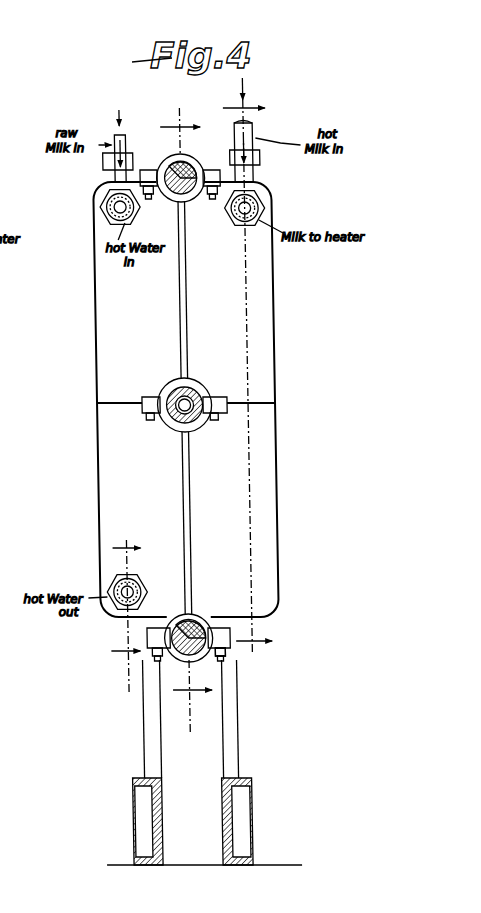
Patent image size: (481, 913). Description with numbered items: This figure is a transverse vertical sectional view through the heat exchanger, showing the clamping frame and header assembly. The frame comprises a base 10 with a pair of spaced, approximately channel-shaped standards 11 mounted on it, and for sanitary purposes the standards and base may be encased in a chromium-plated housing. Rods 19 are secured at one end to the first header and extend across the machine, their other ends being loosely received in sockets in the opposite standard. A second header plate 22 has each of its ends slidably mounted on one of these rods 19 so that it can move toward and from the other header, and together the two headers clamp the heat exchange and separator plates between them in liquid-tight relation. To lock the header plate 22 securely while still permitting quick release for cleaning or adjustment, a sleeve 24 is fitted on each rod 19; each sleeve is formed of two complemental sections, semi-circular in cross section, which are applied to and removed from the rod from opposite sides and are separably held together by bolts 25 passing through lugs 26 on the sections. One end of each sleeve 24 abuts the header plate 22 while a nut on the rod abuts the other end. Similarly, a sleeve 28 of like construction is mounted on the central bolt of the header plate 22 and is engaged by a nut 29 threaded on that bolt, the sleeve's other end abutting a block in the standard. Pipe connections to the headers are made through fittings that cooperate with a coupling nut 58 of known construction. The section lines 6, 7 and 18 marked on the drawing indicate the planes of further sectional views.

The section line 6- 6 is at (186, 414).
The section line 7- 7 is at (248, 373).
The base 10 is at (225, 800).
The standard 11 is at (154, 739).
The section line 18- 18 is at (125, 608).
The rod 19 is at (181, 164).
The header plate 22 is at (105, 372).
The sleeve 24 is at (198, 165).
The bolt 25 is at (160, 421).
The lug 26 is at (220, 654).
The sleeve 28 is at (177, 426).
The nut 29 is at (199, 387).
The coupling nut 58 is at (106, 214).